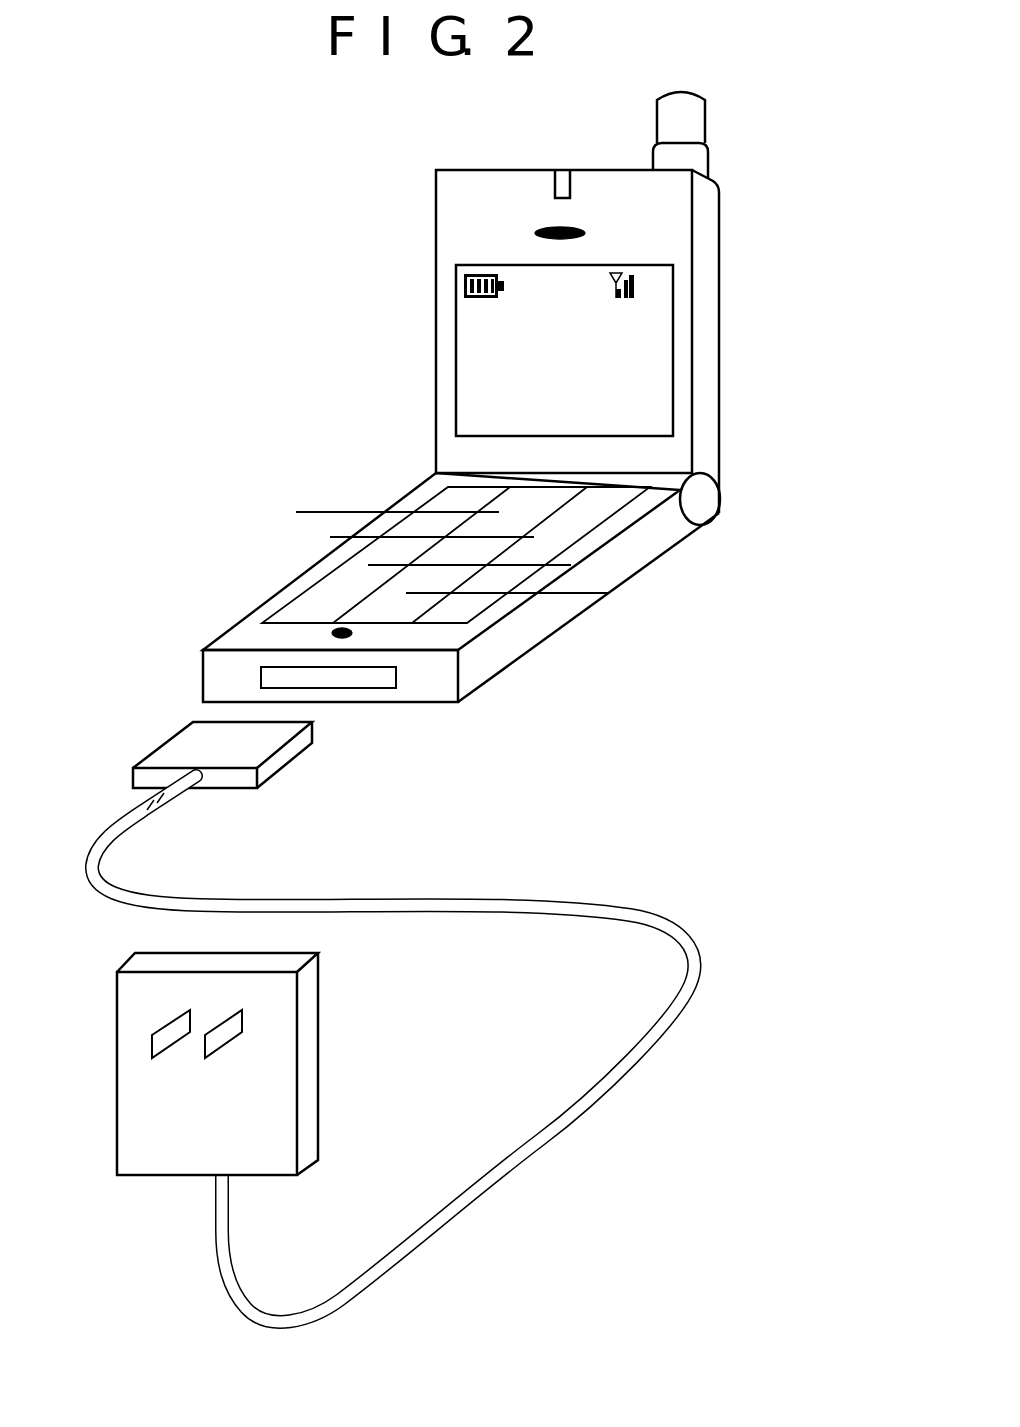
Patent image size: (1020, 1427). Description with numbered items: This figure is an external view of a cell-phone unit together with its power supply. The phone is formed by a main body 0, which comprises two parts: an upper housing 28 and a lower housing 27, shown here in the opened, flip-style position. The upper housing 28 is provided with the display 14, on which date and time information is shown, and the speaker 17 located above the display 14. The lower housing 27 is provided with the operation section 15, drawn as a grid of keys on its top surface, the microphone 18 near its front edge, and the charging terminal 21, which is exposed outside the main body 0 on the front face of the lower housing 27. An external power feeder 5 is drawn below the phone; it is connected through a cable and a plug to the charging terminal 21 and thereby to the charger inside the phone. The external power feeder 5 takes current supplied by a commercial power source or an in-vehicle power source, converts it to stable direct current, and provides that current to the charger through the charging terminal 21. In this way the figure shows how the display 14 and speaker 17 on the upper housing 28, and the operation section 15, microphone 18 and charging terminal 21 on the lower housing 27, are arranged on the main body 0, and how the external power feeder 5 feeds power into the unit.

The main body 0 is at (477, 417).
The external power feeder 5 is at (128, 1042).
The display 14 is at (673, 348).
The operation section 15 is at (560, 555).
The speaker 17 is at (535, 233).
The microphone 18 is at (332, 633).
The charging terminal 21 is at (396, 681).
The lower housing 27 is at (547, 622).
The upper housing 28 is at (708, 393).